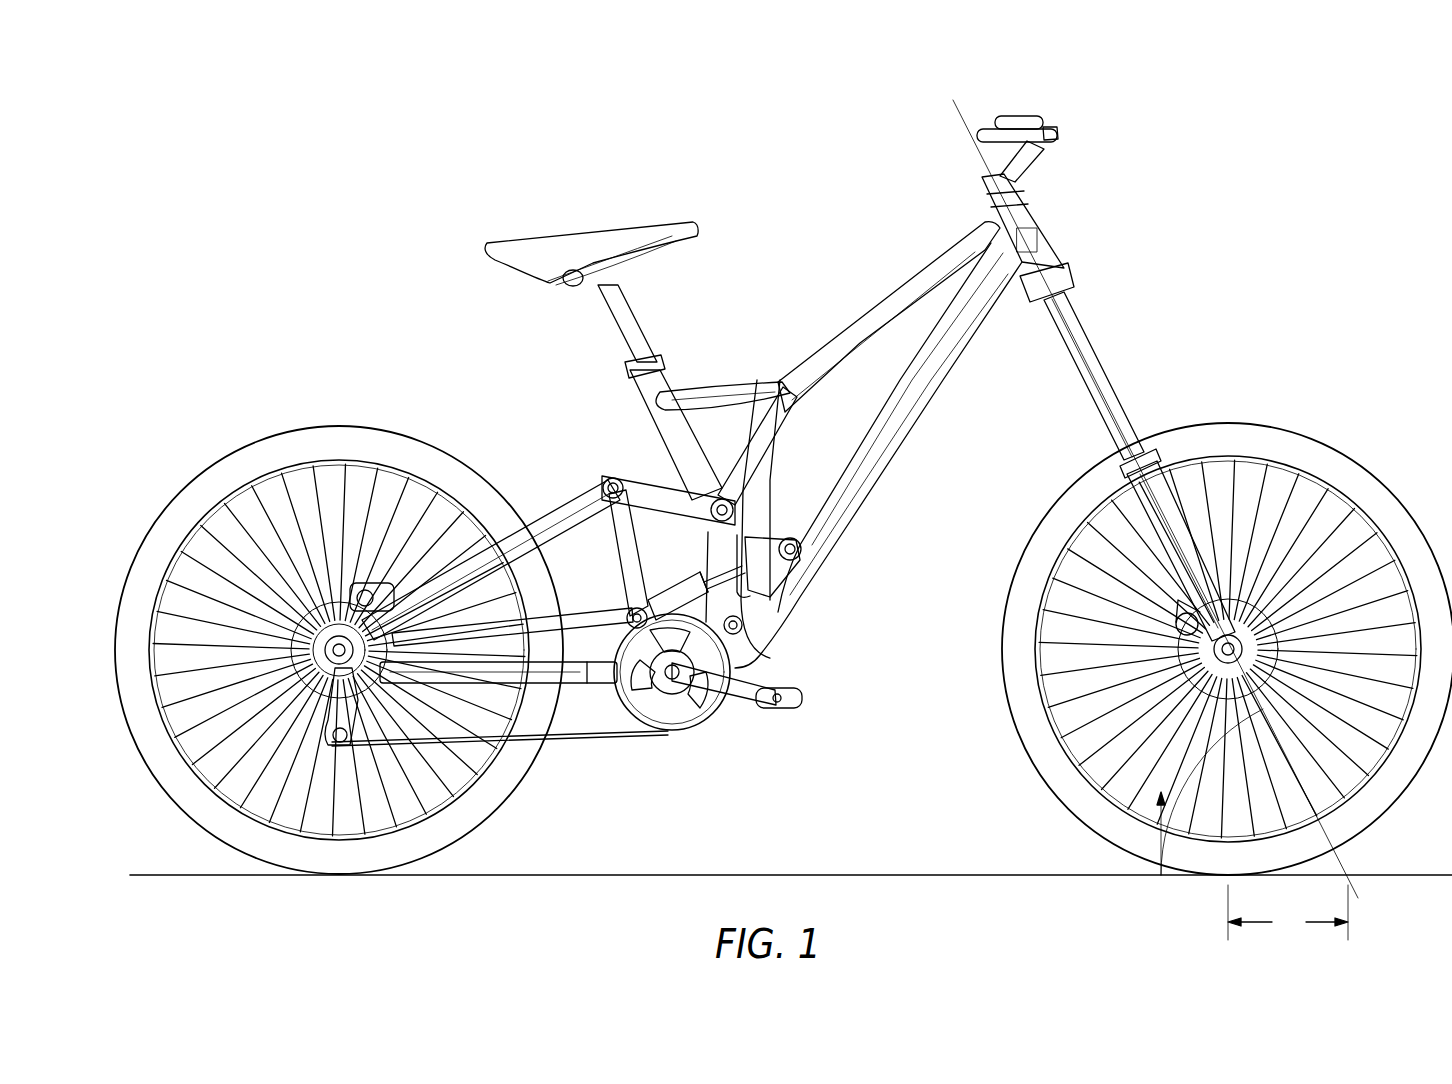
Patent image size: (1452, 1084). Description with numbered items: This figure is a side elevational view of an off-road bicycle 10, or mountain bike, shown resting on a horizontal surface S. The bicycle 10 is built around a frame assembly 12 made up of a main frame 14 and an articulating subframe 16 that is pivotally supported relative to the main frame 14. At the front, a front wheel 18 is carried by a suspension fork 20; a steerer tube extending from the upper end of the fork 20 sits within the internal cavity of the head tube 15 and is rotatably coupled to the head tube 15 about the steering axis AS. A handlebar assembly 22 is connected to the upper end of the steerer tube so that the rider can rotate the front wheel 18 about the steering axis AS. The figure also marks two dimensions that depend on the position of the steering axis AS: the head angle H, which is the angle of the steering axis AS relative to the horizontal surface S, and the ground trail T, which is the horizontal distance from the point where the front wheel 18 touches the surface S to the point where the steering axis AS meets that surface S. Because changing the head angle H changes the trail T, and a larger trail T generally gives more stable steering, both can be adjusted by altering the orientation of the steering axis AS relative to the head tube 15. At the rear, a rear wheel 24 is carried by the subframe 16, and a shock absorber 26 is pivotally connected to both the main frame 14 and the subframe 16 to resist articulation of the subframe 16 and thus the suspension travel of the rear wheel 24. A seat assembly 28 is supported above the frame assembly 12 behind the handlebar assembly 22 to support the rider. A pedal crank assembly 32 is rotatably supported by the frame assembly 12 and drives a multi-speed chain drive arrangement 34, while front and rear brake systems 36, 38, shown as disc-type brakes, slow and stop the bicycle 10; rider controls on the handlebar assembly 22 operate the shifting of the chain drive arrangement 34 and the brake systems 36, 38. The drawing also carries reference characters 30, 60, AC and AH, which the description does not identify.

The bicycle 10 is at (562, 108).
The frame assembly 12 is at (805, 203).
The main frame 14 is at (933, 230).
The head tube 15 is at (1037, 218).
The subframe 16 is at (540, 462).
The front wheel 18 is at (1205, 635).
The suspension fork 20 is at (1173, 520).
The handlebar assembly 22 is at (1017, 116).
The rear wheel 24 is at (333, 613).
The shock absorber 26 is at (760, 560).
The seat assembly 28 is at (560, 232).
The seat post 30 is at (633, 310).
The pedal crank assembly 32 is at (721, 702).
The multi-speed chain drive arrangement 34 is at (582, 762).
The front brake system 36 is at (1168, 612).
The rear brake system 38 is at (322, 568).
The brace 60 is at (672, 380).
The steering axis AS is at (1078, 333).
The crank axis AC is at (680, 690).
The rear hub axis AH is at (330, 662).
The head angle H is at (1158, 798).
The horizontal surface S is at (150, 873).
The ground trail T is at (1288, 912).